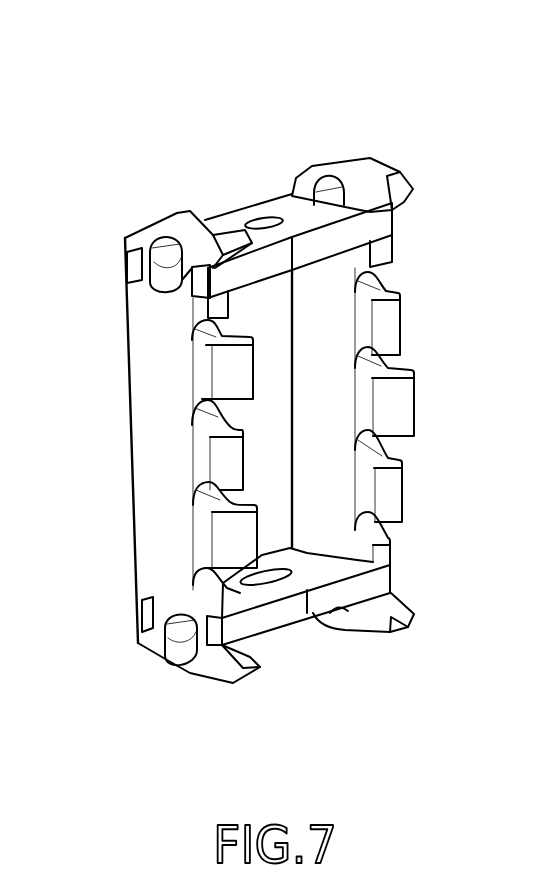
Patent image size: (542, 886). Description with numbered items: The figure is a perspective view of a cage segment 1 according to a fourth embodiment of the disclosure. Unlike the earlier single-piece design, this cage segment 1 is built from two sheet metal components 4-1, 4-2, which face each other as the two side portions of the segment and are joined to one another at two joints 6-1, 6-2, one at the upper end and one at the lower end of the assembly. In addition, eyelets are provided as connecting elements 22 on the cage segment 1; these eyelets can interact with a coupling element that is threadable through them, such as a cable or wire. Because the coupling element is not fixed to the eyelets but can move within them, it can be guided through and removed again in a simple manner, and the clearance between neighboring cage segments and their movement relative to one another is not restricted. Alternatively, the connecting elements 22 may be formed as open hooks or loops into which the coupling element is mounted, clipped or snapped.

The cage segment 1 is at (450, 110).
The joint 6-1 is at (237, 197).
The joint 6-2 is at (313, 635).
The sheet metal component 4-1 is at (333, 455).
The sheet metal component 4-2 is at (157, 545).
The connecting element 22 is at (332, 200).